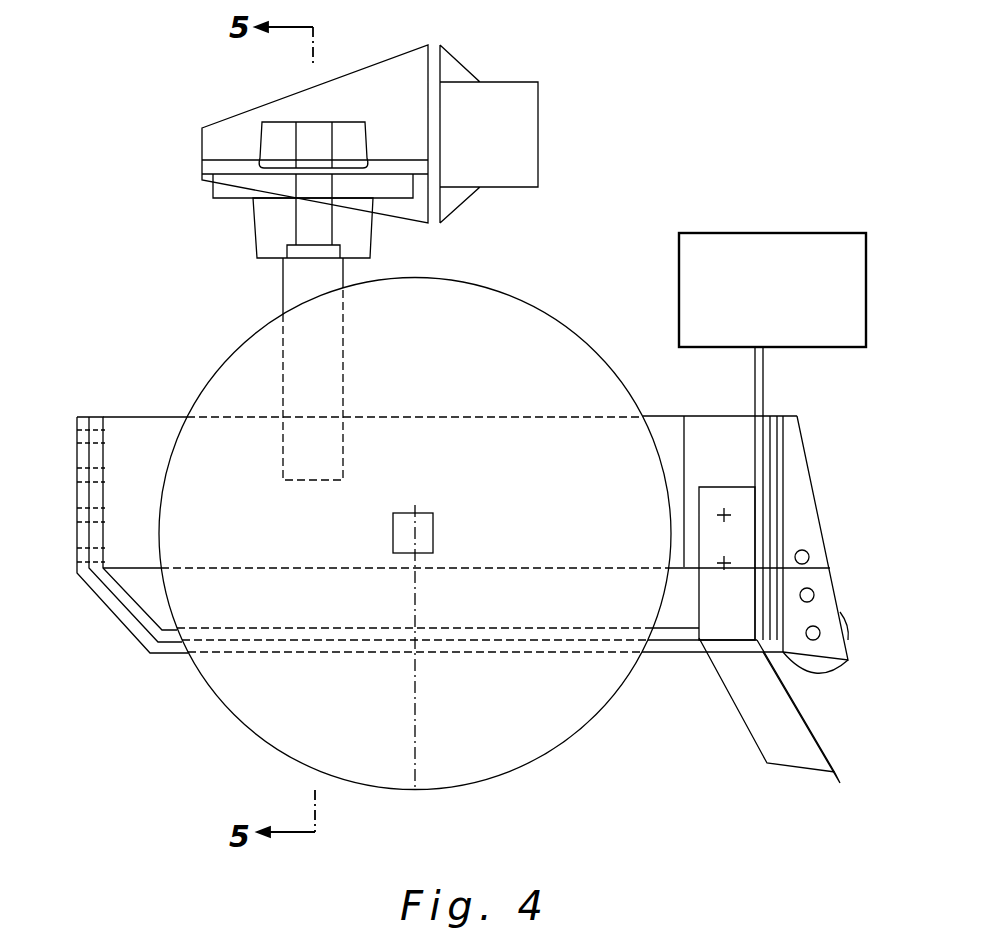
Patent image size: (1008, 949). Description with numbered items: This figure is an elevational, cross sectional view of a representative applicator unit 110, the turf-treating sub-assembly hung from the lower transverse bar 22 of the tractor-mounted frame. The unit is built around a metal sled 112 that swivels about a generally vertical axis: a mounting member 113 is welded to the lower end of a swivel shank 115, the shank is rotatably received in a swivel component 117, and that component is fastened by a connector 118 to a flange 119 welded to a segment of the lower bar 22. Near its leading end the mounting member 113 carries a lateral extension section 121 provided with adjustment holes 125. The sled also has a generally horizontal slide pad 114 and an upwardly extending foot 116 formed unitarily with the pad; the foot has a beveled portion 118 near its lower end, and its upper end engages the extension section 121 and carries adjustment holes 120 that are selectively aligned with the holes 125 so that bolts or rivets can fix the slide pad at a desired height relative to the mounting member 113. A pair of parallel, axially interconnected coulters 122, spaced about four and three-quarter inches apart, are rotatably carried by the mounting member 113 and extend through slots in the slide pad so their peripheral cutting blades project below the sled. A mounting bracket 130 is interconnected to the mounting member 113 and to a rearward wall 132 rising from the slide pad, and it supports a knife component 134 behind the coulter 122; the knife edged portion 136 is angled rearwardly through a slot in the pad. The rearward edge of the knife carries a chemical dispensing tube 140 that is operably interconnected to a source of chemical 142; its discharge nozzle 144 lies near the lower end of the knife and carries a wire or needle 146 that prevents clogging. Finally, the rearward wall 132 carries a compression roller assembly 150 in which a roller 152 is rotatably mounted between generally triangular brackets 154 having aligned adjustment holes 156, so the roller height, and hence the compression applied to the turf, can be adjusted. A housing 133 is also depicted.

The transverse bar 22 is at (510, 82).
The applicator unit 110 is at (198, 330).
The sled 112 is at (102, 417).
The mounting member 113 is at (437, 437).
The slide pad 114 is at (172, 655).
The swivel shank 115 is at (285, 352).
The foot 116 is at (77, 572).
The swivel component 117 is at (293, 225).
The connector 118 is at (273, 133).
The flange 119 is at (202, 167).
The adjustment holes 120 is at (77, 437).
The lateral extension section 121 is at (103, 457).
The coulter 122 is at (550, 318).
The adjustment holes 125 is at (157, 522).
The mounting bracket 130 is at (684, 450).
The rearward wall 132 is at (773, 455).
The housing 133 is at (727, 563).
The knife component 134 is at (733, 705).
The knife edged portion 136 is at (760, 758).
The chemical dispensing tube 140 is at (808, 718).
The source of chemical 142 is at (768, 230).
The discharge nozzle 144 is at (873, 750).
The wire or needle 146 is at (840, 783).
The compression roller assembly 150 is at (823, 527).
The roller 152 is at (848, 622).
The triangular bracket 154 is at (798, 500).
The adjustment holes 156 is at (809, 557).